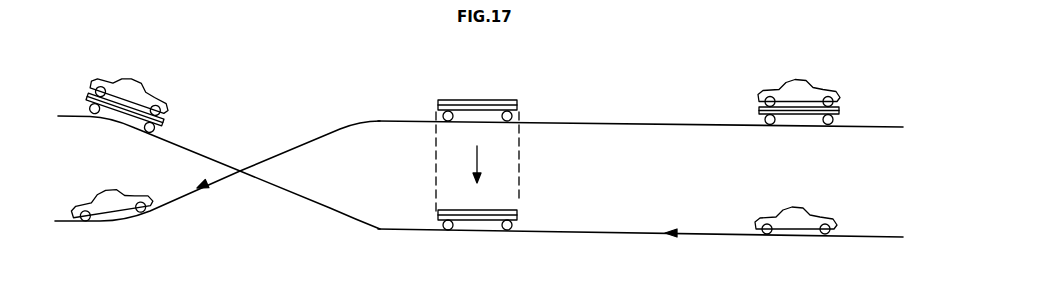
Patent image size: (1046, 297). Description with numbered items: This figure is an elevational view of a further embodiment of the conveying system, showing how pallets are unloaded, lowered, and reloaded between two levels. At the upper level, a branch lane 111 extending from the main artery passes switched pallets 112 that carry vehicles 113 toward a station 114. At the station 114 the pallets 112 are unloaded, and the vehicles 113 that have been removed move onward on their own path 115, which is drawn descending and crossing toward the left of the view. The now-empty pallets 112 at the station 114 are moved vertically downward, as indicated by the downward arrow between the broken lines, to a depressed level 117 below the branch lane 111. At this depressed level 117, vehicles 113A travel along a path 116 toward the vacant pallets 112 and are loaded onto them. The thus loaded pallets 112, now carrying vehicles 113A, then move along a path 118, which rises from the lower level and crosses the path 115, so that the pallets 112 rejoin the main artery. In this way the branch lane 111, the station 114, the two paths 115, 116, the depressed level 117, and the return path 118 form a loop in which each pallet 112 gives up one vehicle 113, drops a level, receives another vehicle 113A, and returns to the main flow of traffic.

The branch lane 111 is at (870, 127).
The pallet 112 is at (163, 118).
The vehicle 113 is at (103, 207).
The vehicle 113A is at (143, 91).
The station 114 is at (530, 101).
The path 115 is at (172, 203).
The path 116 is at (877, 234).
The depressed level 117 is at (632, 245).
The path 118 is at (190, 151).